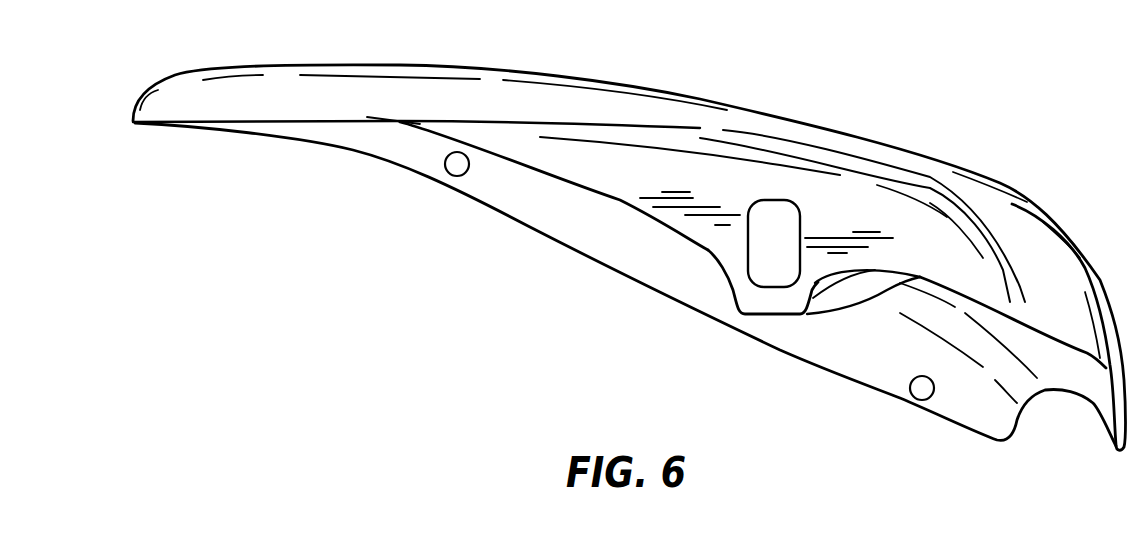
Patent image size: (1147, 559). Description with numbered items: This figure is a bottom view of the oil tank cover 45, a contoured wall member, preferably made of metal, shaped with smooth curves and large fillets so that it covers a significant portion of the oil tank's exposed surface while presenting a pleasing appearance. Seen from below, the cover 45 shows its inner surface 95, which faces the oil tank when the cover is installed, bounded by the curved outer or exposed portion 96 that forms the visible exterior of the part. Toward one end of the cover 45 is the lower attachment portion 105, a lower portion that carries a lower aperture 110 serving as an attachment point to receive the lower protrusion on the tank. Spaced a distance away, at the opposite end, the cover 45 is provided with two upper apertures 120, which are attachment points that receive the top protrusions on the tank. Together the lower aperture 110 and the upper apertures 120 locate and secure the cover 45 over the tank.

The visor rim 96 is at (572, 100).
The curved side portion of visor 45 is at (1022, 220).
The visor body 95 is at (557, 222).
The notch 105 is at (728, 250).
The boss 110 is at (752, 232).
The mounting holes 120 is at (456, 177).